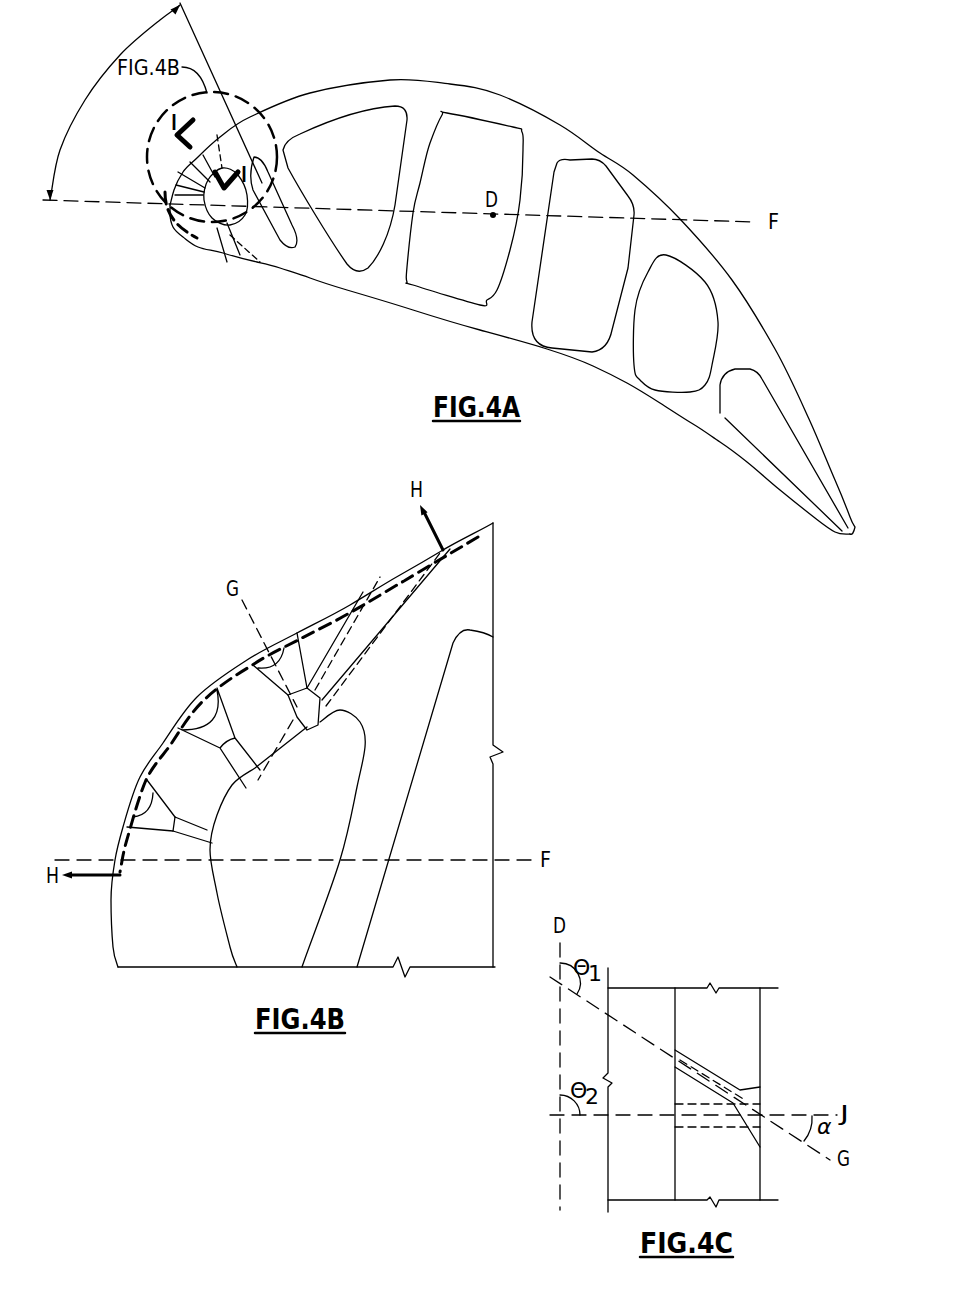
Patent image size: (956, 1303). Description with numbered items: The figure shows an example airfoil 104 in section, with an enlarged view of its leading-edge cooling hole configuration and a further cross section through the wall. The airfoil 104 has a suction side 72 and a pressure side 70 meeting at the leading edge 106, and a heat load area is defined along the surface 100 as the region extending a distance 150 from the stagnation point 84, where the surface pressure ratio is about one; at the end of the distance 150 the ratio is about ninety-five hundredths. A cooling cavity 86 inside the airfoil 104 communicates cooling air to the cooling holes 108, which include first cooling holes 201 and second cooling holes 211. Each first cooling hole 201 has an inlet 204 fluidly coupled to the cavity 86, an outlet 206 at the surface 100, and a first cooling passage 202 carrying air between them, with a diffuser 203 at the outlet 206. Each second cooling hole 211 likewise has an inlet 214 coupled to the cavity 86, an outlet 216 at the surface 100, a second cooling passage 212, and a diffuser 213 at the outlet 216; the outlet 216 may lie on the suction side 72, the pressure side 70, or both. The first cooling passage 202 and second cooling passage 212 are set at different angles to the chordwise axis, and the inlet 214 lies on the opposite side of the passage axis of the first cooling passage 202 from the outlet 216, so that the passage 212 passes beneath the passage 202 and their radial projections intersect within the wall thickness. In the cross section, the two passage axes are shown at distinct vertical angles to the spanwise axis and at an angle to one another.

In FIG. 4A, the pressure side 70 is at (445, 325).
In FIG. 4A, the suction side 72 is at (497, 86).
In FIG. 4A, the stagnation point 84 is at (170, 210).
In FIG. 4A, the cooling cavity 86 is at (208, 247).
In FIG. 4B, the cooling cavity 86 is at (297, 958).
In FIG. 4C, the cooling cavity 86 is at (652, 1098).
In FIG. 4A, the surface 100 is at (238, 112).
In FIG. 4B, the surface 100 is at (150, 730).
In FIG. 4C, the surface 100 is at (771, 1004).
In FIG. 4A, the airfoil 104 is at (700, 88).
In FIG. 4B, the airfoil 104 is at (163, 598).
In FIG. 4C, the airfoil 104 is at (742, 976).
In FIG. 4A, the leading edge 106 is at (182, 217).
In FIG. 4B, the leading edge 106 is at (110, 887).
In FIG. 4C, the leading edge 106 is at (771, 1030).
In FIG. 4A, the cooling holes 108 is at (180, 190).
In FIG. 4A, the distance 150 is at (68, 110).
In FIG. 4A, the first cooling hole 201 is at (175, 173).
In FIG. 4B, the first cooling hole 201 is at (203, 815).
In FIG. 4C, the first cooling hole 201 is at (746, 1078).
In FIG. 4B, the first cooling passage 202 is at (320, 730).
In FIG. 4B, the diffuser 203 is at (140, 808).
In FIG. 4B, the inlet 204 is at (357, 779).
In FIG. 4C, the inlet 204 is at (674, 1047).
In FIG. 4B, the outlet 206 is at (293, 633).
In FIG. 4C, the outlet 206 is at (756, 1088).
In FIG. 4A, the second cooling hole 211 is at (208, 137).
In FIG. 4B, the second cooling hole 211 is at (285, 710).
In FIG. 4C, the second cooling hole 211 is at (747, 1147).
In FIG. 4B, the second cooling passage 212 is at (300, 742).
In FIG. 4B, the diffuser 213 is at (363, 597).
In FIG. 4B, the inlet 214 is at (293, 752).
In FIG. 4C, the inlet 214 is at (675, 1122).
In FIG. 4B, the outlet 216 is at (380, 577).
In FIG. 4C, the outlet 216 is at (757, 1141).